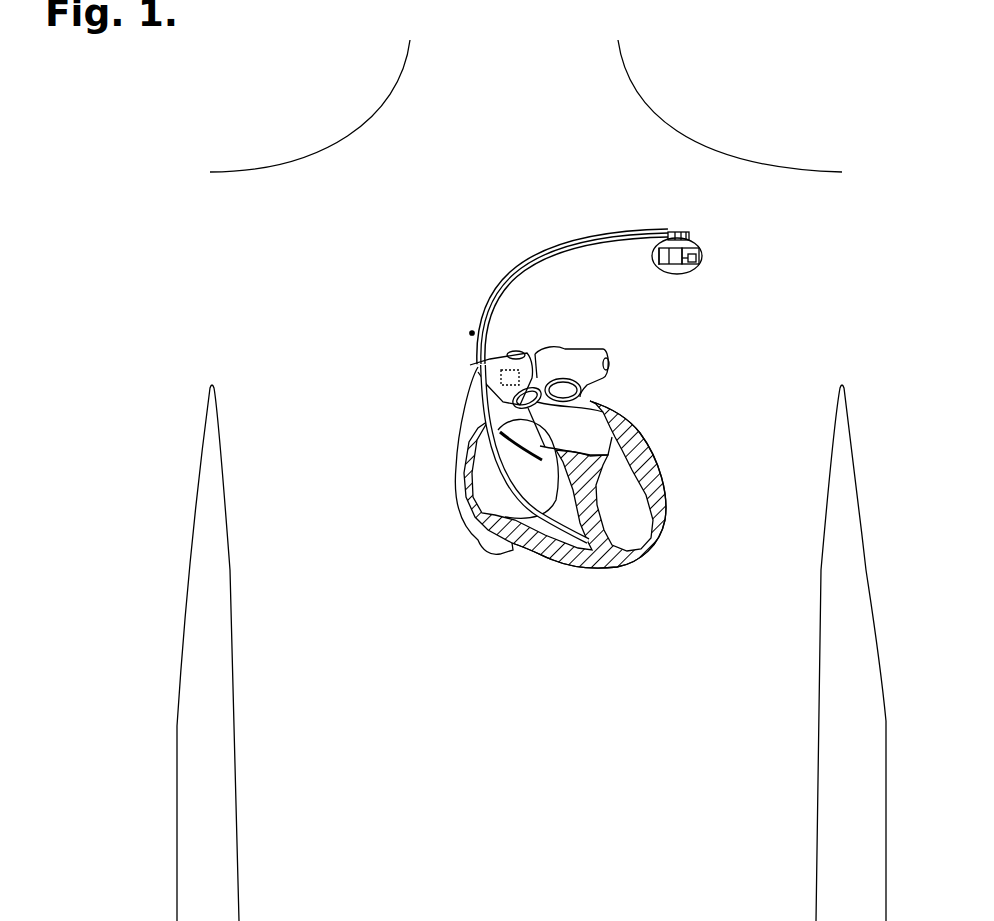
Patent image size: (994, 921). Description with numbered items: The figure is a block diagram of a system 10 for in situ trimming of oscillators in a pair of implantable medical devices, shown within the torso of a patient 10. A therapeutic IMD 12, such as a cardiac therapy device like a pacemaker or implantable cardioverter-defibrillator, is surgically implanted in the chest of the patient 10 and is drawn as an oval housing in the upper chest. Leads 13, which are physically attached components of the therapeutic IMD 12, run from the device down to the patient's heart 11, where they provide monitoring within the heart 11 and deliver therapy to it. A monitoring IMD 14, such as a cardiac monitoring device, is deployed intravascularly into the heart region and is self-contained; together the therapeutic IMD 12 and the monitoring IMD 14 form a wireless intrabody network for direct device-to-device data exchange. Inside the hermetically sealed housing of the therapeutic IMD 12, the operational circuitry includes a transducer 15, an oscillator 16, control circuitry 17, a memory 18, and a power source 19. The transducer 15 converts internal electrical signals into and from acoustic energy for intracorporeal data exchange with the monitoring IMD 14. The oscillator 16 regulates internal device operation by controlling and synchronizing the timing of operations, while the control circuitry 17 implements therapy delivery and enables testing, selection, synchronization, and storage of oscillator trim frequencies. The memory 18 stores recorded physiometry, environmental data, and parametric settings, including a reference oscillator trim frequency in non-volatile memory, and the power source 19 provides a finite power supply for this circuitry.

The patient 10 is at (301, 101).
The heart 11 is at (528, 457).
The therapeutic IMD 12 is at (683, 255).
The leads 13 is at (471, 333).
The monitoring IMD 14 is at (487, 367).
The transducer 15 is at (700, 246).
The oscillator 16 is at (702, 262).
The control circuitry 17 is at (692, 268).
The memory 18 is at (682, 273).
The power source 19 is at (655, 259).